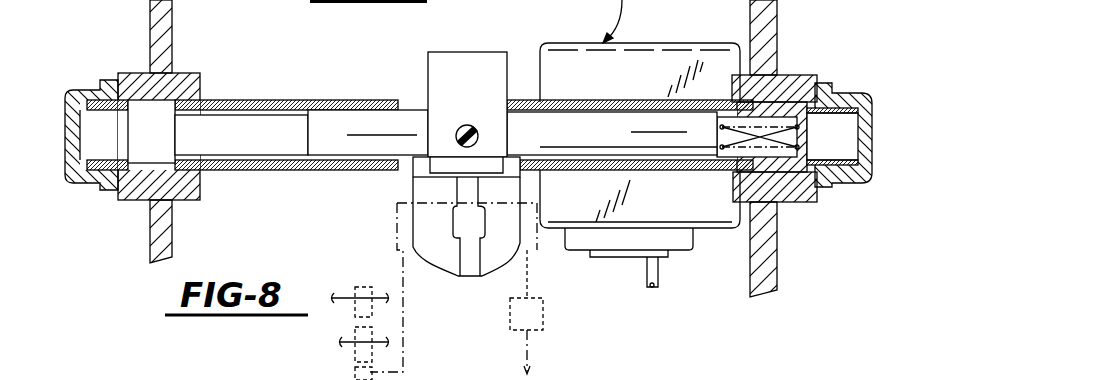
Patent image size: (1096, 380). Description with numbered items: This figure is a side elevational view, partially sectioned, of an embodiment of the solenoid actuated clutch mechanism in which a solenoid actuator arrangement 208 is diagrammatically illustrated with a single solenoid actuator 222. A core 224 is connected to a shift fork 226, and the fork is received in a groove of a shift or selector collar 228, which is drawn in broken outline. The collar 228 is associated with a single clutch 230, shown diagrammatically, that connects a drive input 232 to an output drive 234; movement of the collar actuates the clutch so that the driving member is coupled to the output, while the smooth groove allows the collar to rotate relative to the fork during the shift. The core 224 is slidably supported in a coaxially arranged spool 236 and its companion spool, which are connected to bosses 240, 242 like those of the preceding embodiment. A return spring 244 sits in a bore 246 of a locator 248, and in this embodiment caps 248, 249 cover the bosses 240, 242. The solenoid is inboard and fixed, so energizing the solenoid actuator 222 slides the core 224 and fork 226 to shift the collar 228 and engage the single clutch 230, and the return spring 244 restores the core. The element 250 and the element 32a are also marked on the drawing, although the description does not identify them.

The actuator assembly 208 is at (733, 50).
The solenoid actuator 222 is at (673, 58).
The core 224 is at (518, 117).
The shift fork 226 is at (508, 238).
The shift or selector collar 228 is at (535, 250).
The single clutch 230 is at (510, 308).
The drive input 232 is at (340, 298).
The output drive 234 is at (540, 347).
The spool 236 is at (303, 100).
The boss 240 is at (195, 85).
The boss 242 is at (800, 78).
The return spring 244 is at (813, 190).
The bore 246 is at (795, 147).
The cap 248 is at (93, 96).
The cap 249 is at (845, 97).
The mounting 250 is at (669, 372).
The wall 32a is at (812, 378).